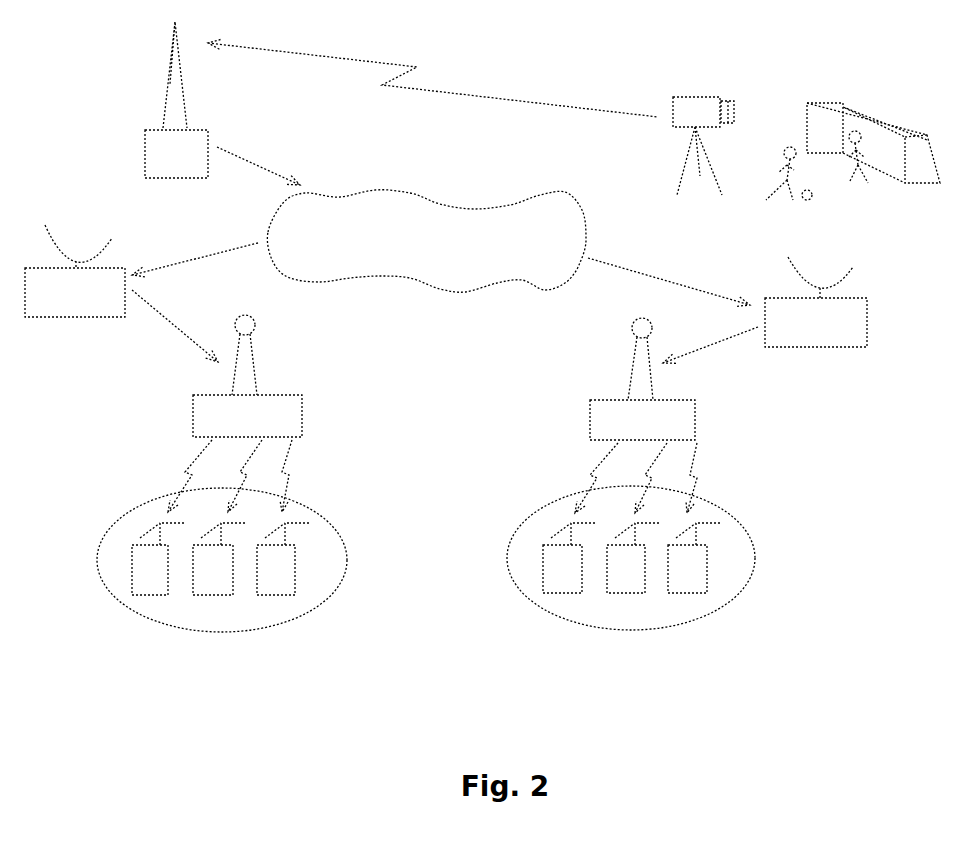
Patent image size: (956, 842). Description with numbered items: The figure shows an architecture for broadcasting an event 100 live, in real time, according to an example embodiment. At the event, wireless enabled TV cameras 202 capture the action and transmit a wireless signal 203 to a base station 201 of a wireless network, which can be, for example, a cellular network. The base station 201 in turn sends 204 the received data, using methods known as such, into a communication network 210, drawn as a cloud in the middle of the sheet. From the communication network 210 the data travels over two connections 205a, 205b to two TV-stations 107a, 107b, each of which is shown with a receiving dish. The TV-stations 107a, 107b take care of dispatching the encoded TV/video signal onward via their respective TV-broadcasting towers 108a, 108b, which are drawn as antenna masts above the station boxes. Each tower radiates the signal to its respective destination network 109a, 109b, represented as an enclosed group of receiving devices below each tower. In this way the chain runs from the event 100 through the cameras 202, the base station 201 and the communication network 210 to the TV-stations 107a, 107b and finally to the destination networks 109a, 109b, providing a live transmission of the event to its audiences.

The event 100 is at (845, 100).
The base station 201 is at (176, 100).
The wireless enabled TV cameras 202 is at (690, 96).
The wireless signal 203 is at (532, 95).
The sending of data 204 is at (252, 156).
The connection 205a is at (212, 231).
The connection 205b is at (632, 267).
The communication network 210 is at (516, 290).
The TV-station 107a is at (121, 293).
The TV-station 107b is at (765, 310).
The TV-broadcasting tower 108a is at (235, 413).
The TV-broadcasting tower 108b is at (636, 415).
The destination network 109a is at (229, 563).
The destination network 109b is at (646, 558).